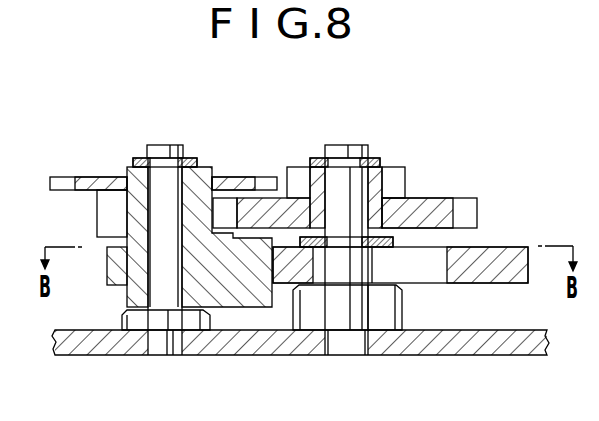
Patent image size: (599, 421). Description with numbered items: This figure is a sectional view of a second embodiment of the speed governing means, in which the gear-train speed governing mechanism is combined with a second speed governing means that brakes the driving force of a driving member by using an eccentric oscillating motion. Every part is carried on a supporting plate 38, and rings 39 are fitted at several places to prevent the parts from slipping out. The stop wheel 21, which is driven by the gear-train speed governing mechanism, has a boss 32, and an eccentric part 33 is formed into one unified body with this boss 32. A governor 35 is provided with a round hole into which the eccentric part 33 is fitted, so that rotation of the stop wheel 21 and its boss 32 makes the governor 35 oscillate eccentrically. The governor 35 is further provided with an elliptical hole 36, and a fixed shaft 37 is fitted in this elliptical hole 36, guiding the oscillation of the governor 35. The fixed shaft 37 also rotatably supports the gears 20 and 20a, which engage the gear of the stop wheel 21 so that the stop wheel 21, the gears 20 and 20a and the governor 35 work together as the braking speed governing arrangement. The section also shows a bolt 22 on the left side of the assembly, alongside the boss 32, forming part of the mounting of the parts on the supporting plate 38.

The gear 20 is at (390, 170).
The gear 20a is at (428, 206).
The stop wheel 21 is at (64, 177).
The bolt 22 is at (163, 144).
The boss 32 is at (123, 210).
The eccentric part 33 is at (238, 297).
The governor 35 is at (283, 283).
The elliptical hole 36 is at (424, 275).
The fixed shaft 37 is at (340, 144).
The supporting plate 38 is at (501, 345).
The rings 39 is at (190, 158).